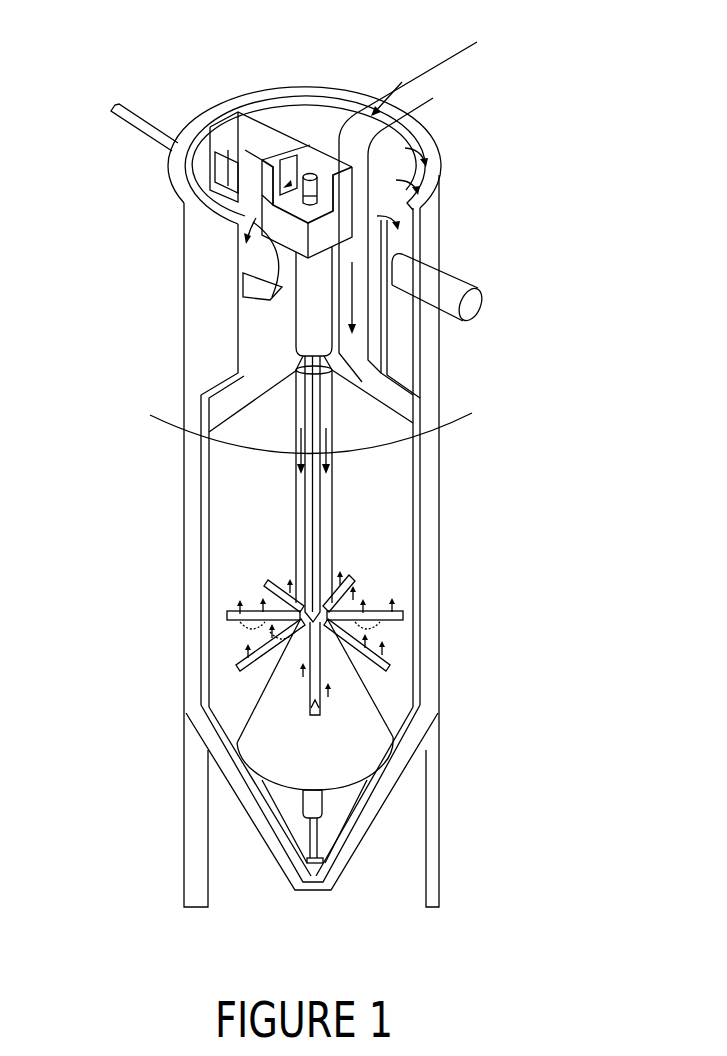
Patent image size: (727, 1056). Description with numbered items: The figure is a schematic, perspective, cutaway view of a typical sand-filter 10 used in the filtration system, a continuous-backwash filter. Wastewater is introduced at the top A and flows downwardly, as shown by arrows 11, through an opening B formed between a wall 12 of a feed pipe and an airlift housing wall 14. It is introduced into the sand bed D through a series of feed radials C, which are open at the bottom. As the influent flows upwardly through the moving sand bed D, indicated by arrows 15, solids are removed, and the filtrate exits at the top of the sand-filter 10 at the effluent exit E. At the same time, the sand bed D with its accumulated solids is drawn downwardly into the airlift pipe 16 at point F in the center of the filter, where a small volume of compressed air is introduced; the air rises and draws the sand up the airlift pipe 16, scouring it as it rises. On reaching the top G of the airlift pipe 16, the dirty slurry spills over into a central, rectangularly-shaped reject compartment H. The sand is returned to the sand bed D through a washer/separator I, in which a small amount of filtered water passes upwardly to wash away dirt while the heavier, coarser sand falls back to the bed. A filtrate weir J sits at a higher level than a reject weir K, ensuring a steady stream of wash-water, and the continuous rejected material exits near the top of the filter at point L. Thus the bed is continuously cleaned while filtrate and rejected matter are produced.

The sand-filter 10 is at (620, 358).
The arrows 11 is at (310, 424).
The wall of feed pipe 12 is at (323, 567).
The airlift housing wall 14 is at (330, 487).
The arrows 15 is at (332, 693).
The airlift pipe 16 is at (323, 855).
The top A is at (420, 198).
The opening B is at (323, 510).
The feed radials C is at (230, 670).
The sand bed D is at (403, 593).
The effluent exit E is at (472, 305).
The bottom of airlift pipe F is at (313, 837).
The top of airlift pipe G is at (322, 190).
The reject compartment H is at (320, 174).
The washer/separator I is at (307, 323).
The filtrate weir J is at (398, 172).
The reject weir K is at (278, 200).
The reject exit point L is at (102, 110).